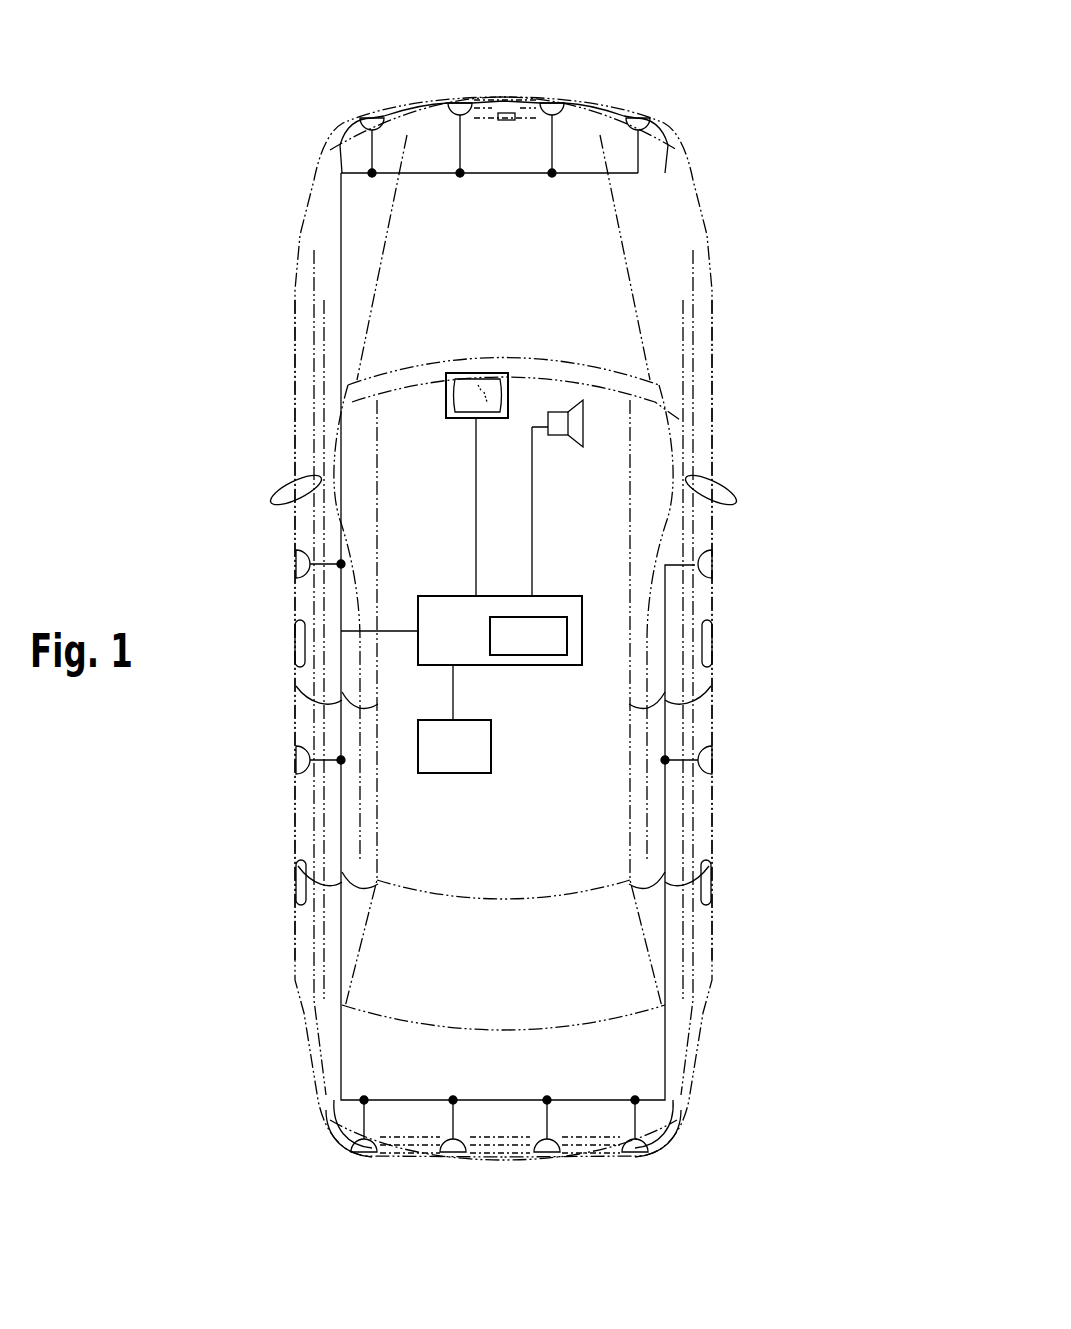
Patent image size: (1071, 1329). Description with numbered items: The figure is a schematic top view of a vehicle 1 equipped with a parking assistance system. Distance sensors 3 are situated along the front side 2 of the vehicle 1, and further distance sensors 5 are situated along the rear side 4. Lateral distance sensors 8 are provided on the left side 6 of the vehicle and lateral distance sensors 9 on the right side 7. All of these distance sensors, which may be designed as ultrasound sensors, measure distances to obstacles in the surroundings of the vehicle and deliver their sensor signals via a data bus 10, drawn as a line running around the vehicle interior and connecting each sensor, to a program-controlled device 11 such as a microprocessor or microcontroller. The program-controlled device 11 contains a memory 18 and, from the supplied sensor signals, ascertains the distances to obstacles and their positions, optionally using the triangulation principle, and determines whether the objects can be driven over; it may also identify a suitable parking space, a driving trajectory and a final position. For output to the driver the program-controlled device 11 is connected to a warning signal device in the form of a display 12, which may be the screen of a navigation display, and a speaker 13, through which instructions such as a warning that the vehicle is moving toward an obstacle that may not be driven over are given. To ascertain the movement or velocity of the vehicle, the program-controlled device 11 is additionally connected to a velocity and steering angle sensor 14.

The vehicle 1 is at (745, 150).
The front side 2 is at (508, 95).
The distance sensors 3 is at (638, 122).
The rear side 4 is at (500, 1160).
The distance sensors 5 is at (637, 1150).
The left side 6 is at (296, 403).
The right side 7 is at (712, 351).
The lateral distance sensors 8 is at (294, 761).
The lateral distance sensors 9 is at (714, 760).
The data bus 10 is at (342, 308).
The program-controlled device 11 is at (467, 623).
The display 12 is at (462, 400).
The speaker 13 is at (584, 427).
The velocity and steering angle sensor 14 is at (475, 752).
The memory 18 is at (533, 637).